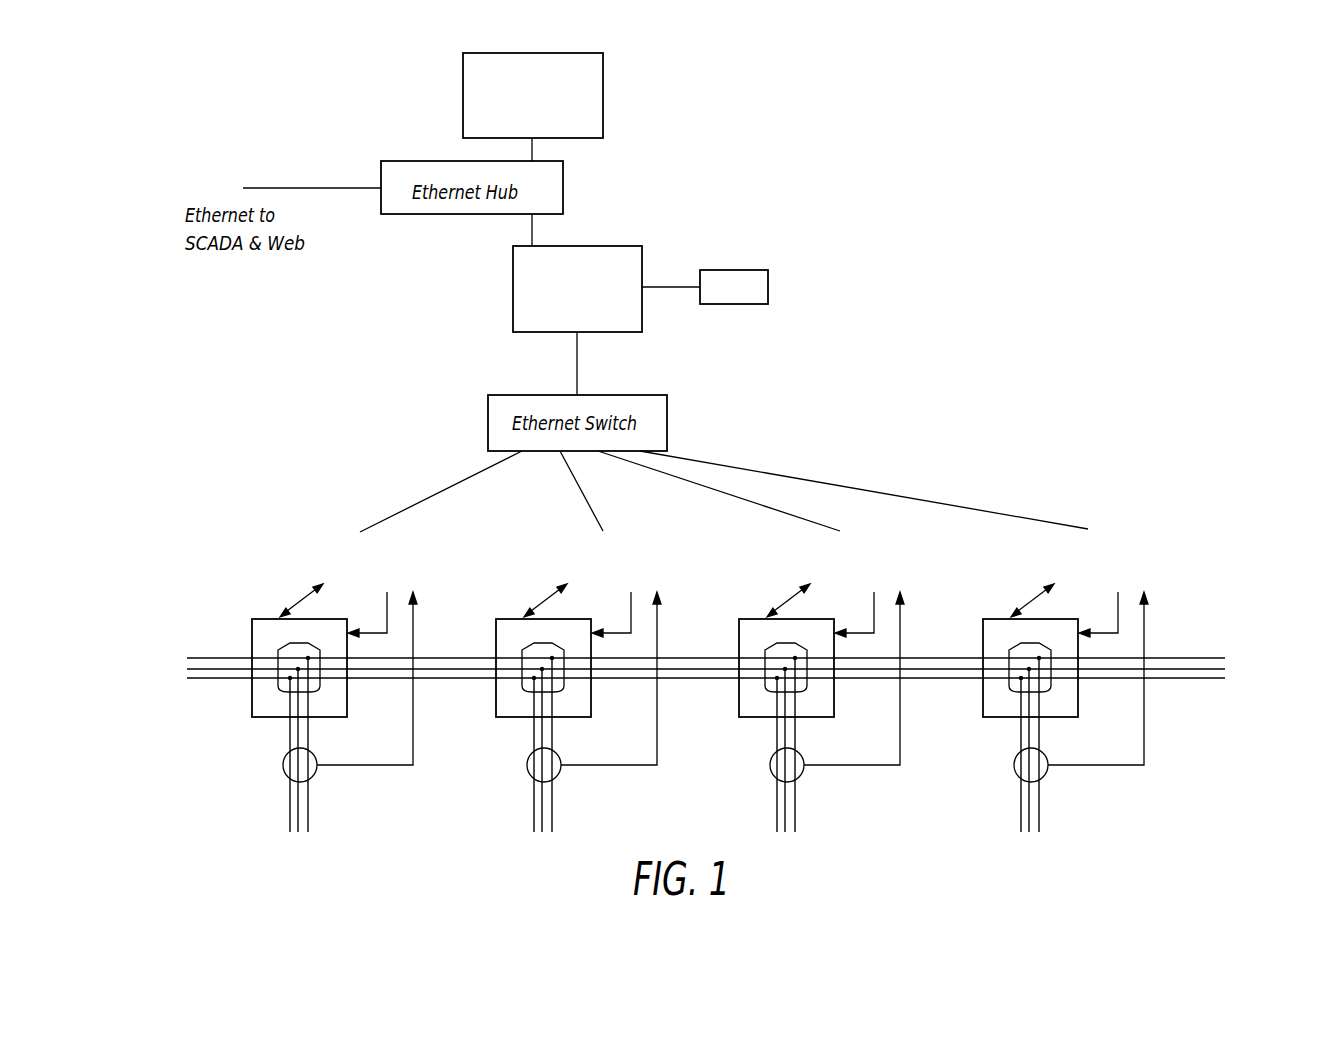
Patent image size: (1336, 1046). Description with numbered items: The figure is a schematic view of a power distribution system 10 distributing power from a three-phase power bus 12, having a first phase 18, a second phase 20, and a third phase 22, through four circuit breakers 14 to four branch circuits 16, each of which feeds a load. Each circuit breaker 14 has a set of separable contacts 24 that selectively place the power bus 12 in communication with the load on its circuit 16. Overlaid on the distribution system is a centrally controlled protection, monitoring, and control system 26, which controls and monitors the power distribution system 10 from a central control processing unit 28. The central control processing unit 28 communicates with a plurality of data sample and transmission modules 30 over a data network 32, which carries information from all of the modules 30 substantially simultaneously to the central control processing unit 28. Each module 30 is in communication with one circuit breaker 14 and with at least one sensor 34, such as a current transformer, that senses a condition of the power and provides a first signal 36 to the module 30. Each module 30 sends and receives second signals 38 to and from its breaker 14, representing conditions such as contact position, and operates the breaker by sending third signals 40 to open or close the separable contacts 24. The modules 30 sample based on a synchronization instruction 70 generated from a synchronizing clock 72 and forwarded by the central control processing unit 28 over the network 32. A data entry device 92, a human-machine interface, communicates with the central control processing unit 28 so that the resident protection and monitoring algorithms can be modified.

The power distribution system 10 is at (206, 575).
The power bus 12 is at (183, 657).
The circuit breaker 14 is at (252, 628).
The branch circuit 16 is at (290, 735).
The first phase 18 is at (1225, 658).
The second phase 20 is at (1225, 669).
The third phase 22 is at (1225, 678).
The separable contacts 24 is at (298, 643).
The protection, monitoring, and control system 26 is at (1110, 452).
The central control processing unit 28 is at (513, 287).
The data sample and transmission module 30 is at (384, 575).
The data network 32 is at (577, 366).
The sensor 34 is at (283, 766).
The first signal 36 is at (365, 767).
The second signal 38 is at (297, 600).
The third signal 40 is at (387, 612).
The synchronization instruction 70 is at (658, 287).
The synchronizing clock 72 is at (732, 304).
The data entry device 92 is at (517, 53).